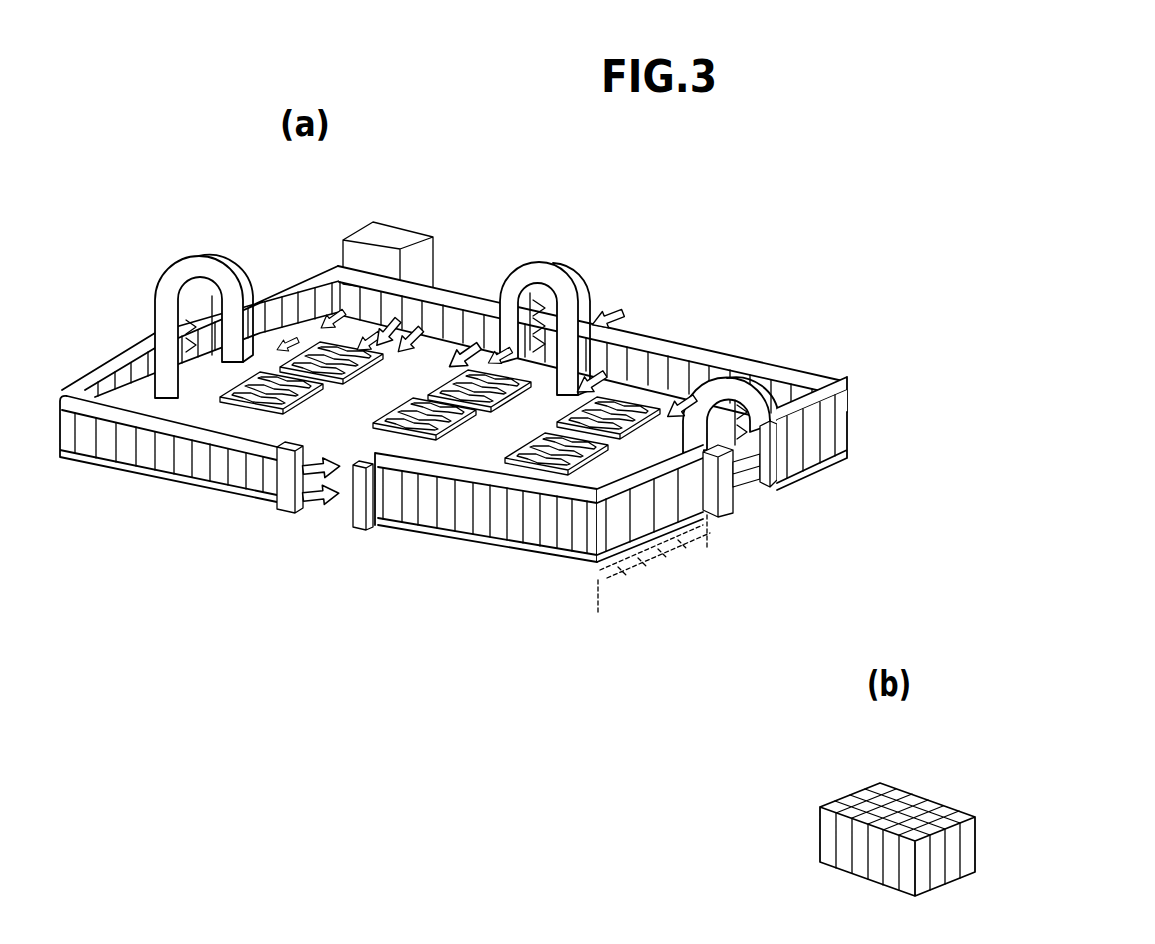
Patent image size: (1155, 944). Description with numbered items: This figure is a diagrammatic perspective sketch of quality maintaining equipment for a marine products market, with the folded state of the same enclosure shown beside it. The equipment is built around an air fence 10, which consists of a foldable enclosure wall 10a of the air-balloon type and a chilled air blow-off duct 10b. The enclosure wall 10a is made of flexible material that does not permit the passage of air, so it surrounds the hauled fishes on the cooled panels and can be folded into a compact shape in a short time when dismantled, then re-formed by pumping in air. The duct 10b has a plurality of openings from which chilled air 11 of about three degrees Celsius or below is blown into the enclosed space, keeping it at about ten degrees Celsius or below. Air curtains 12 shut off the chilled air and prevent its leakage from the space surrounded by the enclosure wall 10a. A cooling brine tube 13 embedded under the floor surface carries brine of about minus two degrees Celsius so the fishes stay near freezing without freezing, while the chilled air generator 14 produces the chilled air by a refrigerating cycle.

The air fence 10 is at (1063, 340).
The enclosure wall 10a is at (851, 396).
The chilled air blow-off duct 10b is at (851, 445).
The chilled air 11 is at (603, 370).
The air curtains 12 is at (318, 504).
The cooling brine tube 13 is at (703, 545).
The chilled air generator 14 is at (396, 228).